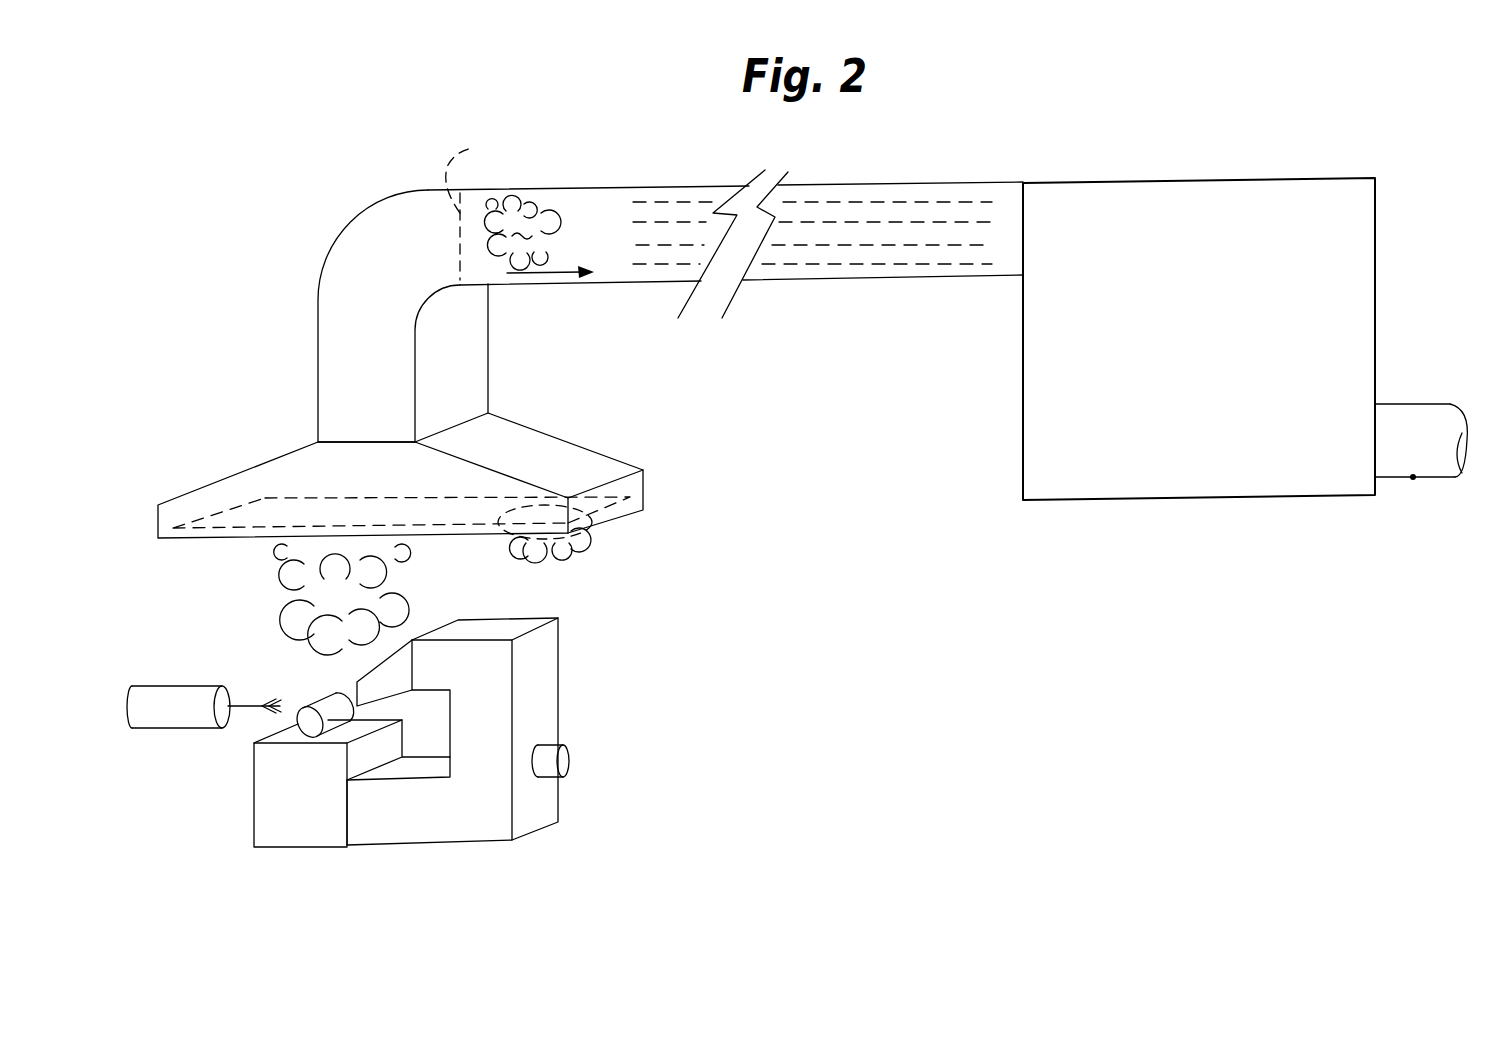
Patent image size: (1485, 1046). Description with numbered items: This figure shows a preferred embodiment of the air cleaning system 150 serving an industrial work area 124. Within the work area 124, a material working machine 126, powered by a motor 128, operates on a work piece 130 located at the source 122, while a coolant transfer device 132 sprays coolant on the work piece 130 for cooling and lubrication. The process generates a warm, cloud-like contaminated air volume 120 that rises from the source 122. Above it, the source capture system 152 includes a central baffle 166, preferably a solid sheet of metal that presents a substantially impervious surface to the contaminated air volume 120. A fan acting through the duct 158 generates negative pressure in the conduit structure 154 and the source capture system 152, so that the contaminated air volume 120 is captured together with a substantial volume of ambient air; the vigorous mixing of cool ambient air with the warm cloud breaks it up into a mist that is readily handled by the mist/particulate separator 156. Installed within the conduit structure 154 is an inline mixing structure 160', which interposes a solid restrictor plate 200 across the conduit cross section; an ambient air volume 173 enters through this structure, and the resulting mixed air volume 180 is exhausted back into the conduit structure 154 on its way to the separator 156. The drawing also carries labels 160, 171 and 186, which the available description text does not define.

The contaminated air volume 120 is at (262, 562).
The source 122 is at (313, 638).
The work area 124 is at (310, 838).
The material working machine 126 is at (560, 687).
The motor 128 is at (570, 765).
The work piece 130 is at (297, 723).
The coolant transfer device 132 is at (157, 684).
The air cleaning system 150 is at (966, 157).
The source capture system 152 is at (636, 485).
The conduit structure 154 is at (667, 200).
The mist/particulate separator 156 is at (1194, 500).
The duct 158 is at (1460, 479).
The hood inlet 160 is at (542, 565).
The inline mixing structure 160' is at (371, 286).
The central baffle 166 is at (265, 498).
The inlet opening 171 is at (593, 542).
The ambient air volume 173 is at (526, 196).
The mixed air volume 180 is at (790, 272).
The flow velocity 186 is at (560, 273).
The restrictor plate 200 is at (480, 205).